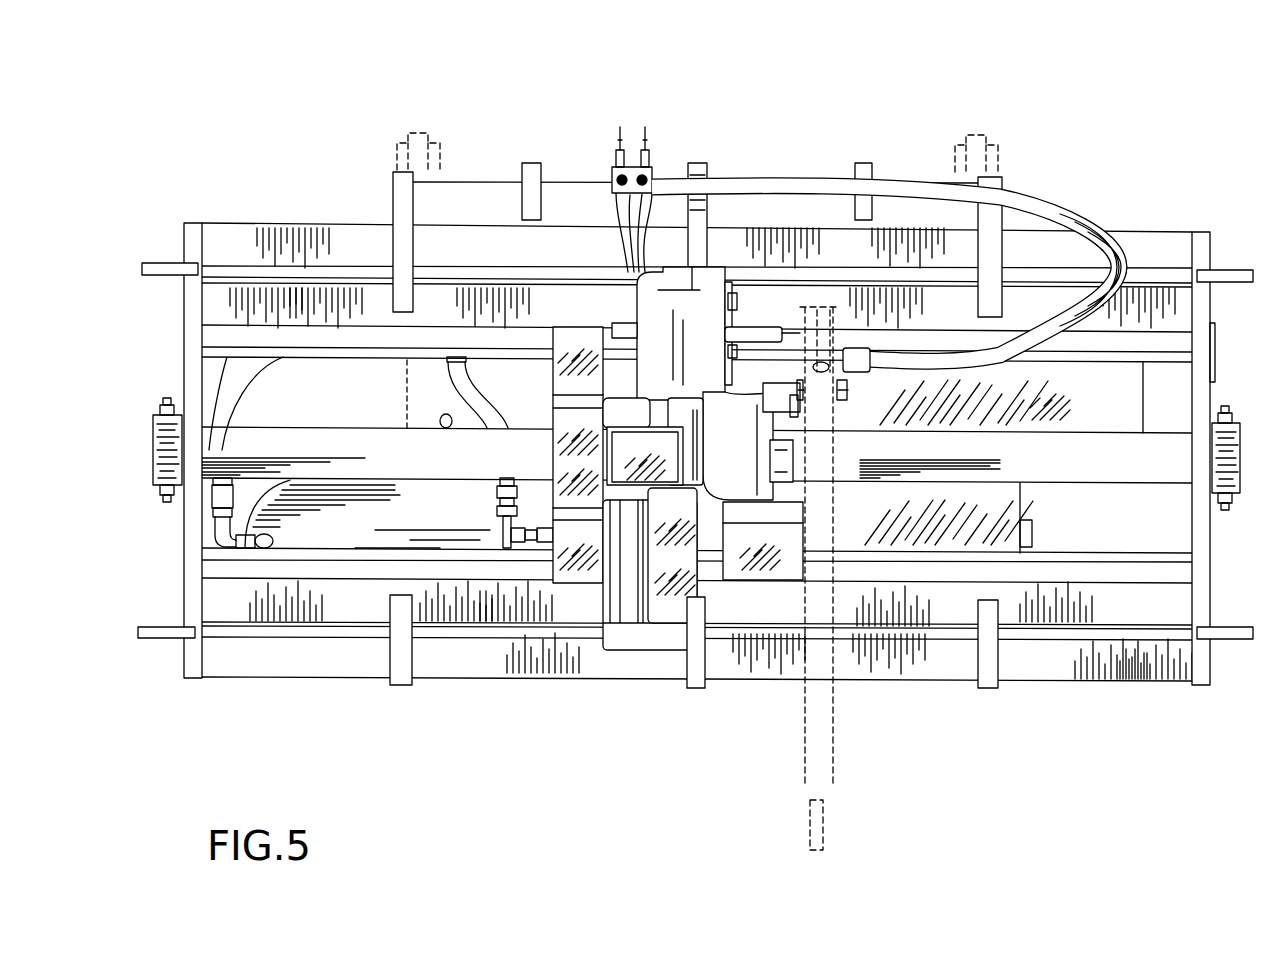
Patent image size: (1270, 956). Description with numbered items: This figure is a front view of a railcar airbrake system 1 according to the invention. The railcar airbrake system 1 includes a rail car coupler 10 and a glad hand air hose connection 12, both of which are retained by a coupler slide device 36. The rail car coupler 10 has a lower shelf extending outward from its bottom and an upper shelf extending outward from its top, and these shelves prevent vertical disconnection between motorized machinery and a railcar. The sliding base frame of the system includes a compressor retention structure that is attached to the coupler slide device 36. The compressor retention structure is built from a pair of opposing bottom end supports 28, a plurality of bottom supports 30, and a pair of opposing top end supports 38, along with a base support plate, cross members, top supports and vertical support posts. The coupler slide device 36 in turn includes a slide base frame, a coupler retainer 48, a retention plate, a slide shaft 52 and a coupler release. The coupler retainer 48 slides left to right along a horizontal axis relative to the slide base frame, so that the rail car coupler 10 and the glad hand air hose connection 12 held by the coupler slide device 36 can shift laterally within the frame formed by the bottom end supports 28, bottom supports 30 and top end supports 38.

The railcar airbrake system 1 is at (988, 84).
The rail car coupler 10 is at (732, 468).
The glad hand air hose connection 12 is at (833, 740).
The bottom end supports 28 is at (150, 638).
The bottom supports 30 is at (400, 686).
The coupler slide device 36 is at (162, 524).
The top end supports 38 is at (153, 263).
The coupler retainer 48 is at (577, 572).
The slide shaft 52 is at (220, 448).